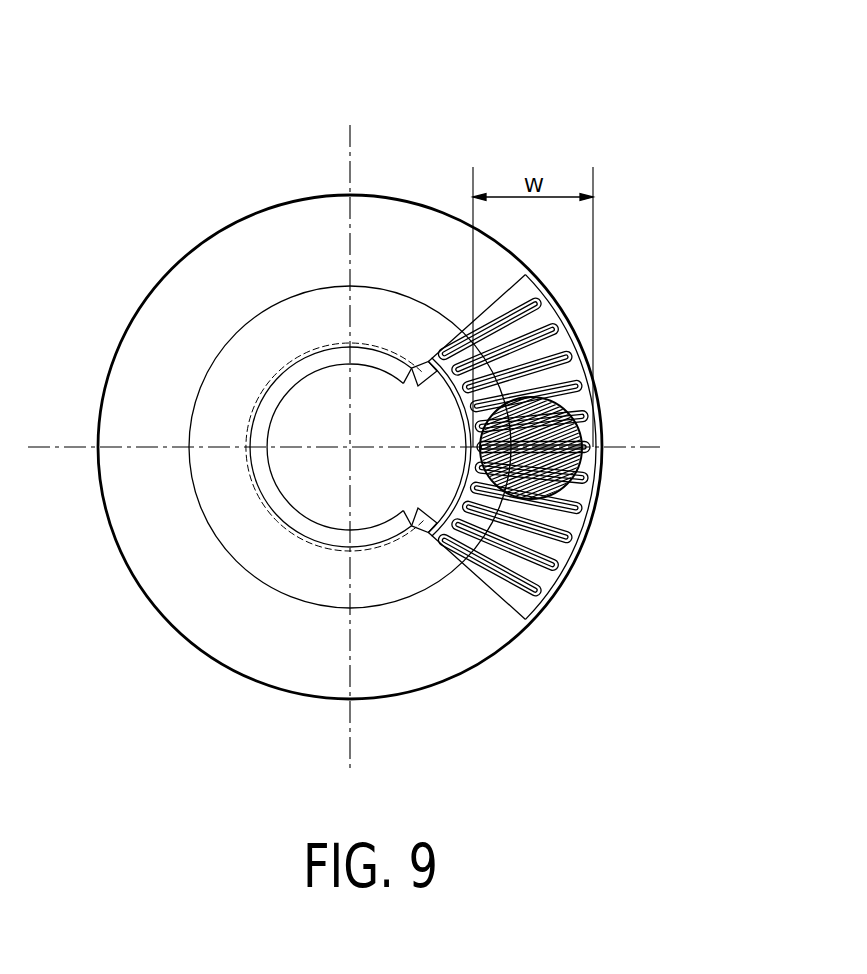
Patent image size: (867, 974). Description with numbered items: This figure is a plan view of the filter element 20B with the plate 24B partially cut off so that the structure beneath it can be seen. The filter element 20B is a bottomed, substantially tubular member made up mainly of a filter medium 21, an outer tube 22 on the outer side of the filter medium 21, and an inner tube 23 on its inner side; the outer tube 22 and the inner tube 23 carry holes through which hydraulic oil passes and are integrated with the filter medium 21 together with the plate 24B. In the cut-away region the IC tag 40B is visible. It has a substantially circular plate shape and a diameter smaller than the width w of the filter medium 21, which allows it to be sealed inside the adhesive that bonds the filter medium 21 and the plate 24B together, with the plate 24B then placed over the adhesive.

The filter element 20B is at (677, 48).
The filter medium 21 is at (567, 575).
The outer tube 22 is at (588, 537).
The inner tube 23 is at (543, 618).
The plate 24B is at (240, 217).
The IC tag 40B is at (601, 474).